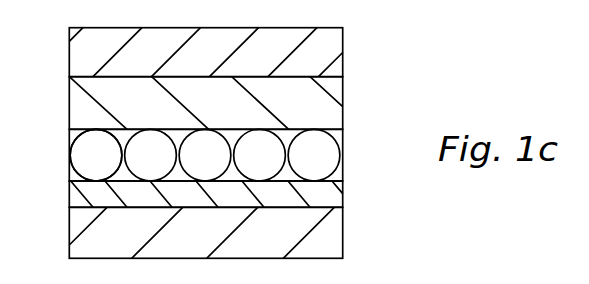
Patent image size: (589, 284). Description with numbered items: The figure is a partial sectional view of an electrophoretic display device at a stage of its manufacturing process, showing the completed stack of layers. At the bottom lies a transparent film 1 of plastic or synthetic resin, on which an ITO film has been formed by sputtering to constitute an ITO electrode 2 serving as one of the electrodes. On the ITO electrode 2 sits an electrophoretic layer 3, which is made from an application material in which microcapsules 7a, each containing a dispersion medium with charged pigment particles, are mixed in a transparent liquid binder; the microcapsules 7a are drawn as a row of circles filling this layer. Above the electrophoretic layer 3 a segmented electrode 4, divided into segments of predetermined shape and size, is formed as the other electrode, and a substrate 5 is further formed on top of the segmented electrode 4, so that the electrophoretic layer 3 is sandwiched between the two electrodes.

The transparent film 1 is at (343, 228).
The ITO electrode 2 is at (343, 193).
The electrophoretic layer 3 is at (360, 127).
The segmented electrode 4 is at (343, 85).
The substrate 5 is at (343, 43).
The microcapsules 7a is at (98, 150).